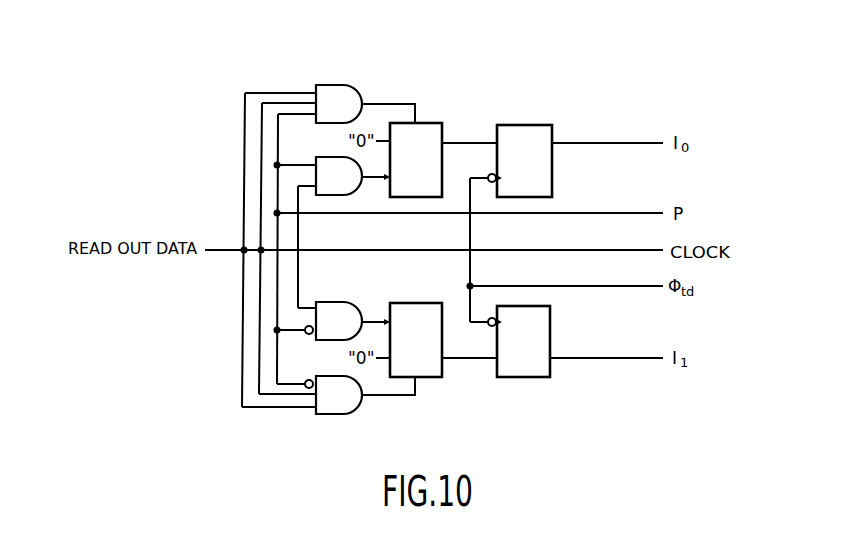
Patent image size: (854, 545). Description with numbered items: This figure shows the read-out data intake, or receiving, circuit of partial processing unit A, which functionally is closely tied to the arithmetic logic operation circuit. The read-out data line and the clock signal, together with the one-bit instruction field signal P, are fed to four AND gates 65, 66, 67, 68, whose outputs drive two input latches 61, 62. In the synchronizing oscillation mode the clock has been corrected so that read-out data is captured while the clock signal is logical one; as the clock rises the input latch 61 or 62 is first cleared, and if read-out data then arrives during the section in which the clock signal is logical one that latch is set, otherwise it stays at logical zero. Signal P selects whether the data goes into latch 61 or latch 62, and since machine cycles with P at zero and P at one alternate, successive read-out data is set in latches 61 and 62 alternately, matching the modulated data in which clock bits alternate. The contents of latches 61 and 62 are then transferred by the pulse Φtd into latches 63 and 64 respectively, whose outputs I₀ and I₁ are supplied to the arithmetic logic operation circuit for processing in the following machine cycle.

The input latch 61 is at (432, 122).
The input latch 62 is at (442, 378).
The latch 63 is at (542, 124).
The latch 64 is at (550, 321).
The AND gate 65 is at (356, 93).
The AND gate 66 is at (330, 158).
The AND gate 67 is at (332, 306).
The AND gate 68 is at (348, 403).